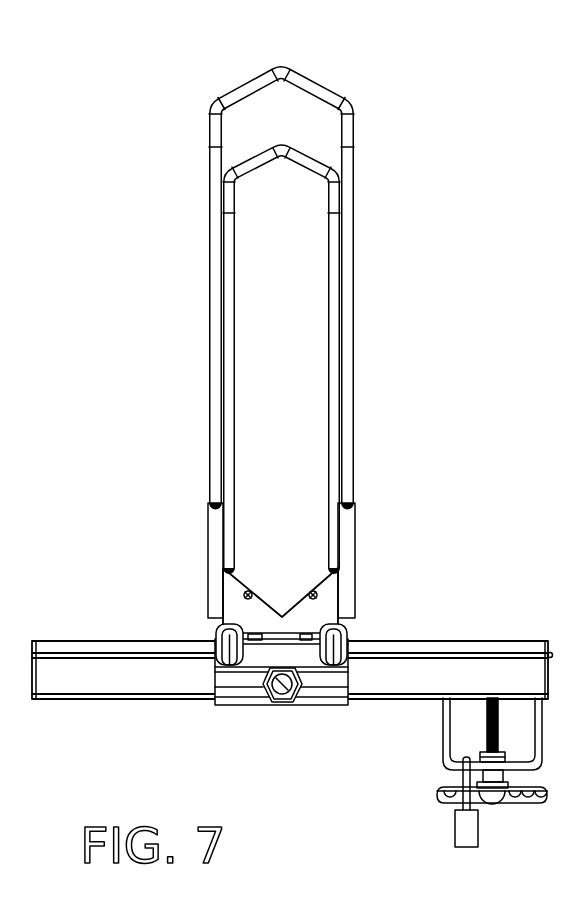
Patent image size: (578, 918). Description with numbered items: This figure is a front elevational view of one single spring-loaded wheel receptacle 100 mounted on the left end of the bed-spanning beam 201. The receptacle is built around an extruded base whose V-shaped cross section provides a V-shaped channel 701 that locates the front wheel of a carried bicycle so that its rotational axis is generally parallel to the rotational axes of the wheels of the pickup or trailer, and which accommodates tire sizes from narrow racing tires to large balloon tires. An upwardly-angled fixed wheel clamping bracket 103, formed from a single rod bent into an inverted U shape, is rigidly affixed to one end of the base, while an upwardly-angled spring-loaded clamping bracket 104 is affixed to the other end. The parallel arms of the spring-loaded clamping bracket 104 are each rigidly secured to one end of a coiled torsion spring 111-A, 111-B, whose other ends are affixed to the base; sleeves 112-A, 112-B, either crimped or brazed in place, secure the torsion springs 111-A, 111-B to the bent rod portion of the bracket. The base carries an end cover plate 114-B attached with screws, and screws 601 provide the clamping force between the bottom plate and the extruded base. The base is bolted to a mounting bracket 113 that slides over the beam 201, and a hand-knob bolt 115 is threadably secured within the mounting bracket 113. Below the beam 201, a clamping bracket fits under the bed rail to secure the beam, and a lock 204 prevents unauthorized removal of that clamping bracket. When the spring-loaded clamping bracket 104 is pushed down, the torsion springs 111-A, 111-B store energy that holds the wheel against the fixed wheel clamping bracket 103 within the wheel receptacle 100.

The single wheel receptacle 100 is at (398, 110).
The fixed wheel clamping bracket 103 is at (333, 252).
The spring-loaded clamping bracket 104 is at (347, 315).
The V-shaped channel 701 is at (283, 598).
The sleeve 112-A is at (215, 552).
The sleeve 112-B is at (347, 550).
The end cover plate 114-B is at (325, 607).
The coiled torsion spring 111-A is at (213, 638).
The coiled torsion spring 111-B is at (343, 640).
The bed-spanning beam 201 is at (128, 680).
The mounting bracket 113 is at (238, 688).
The screws 601 is at (300, 640).
The hand-knob bolt 115 is at (288, 684).
The lock 204 is at (467, 828).